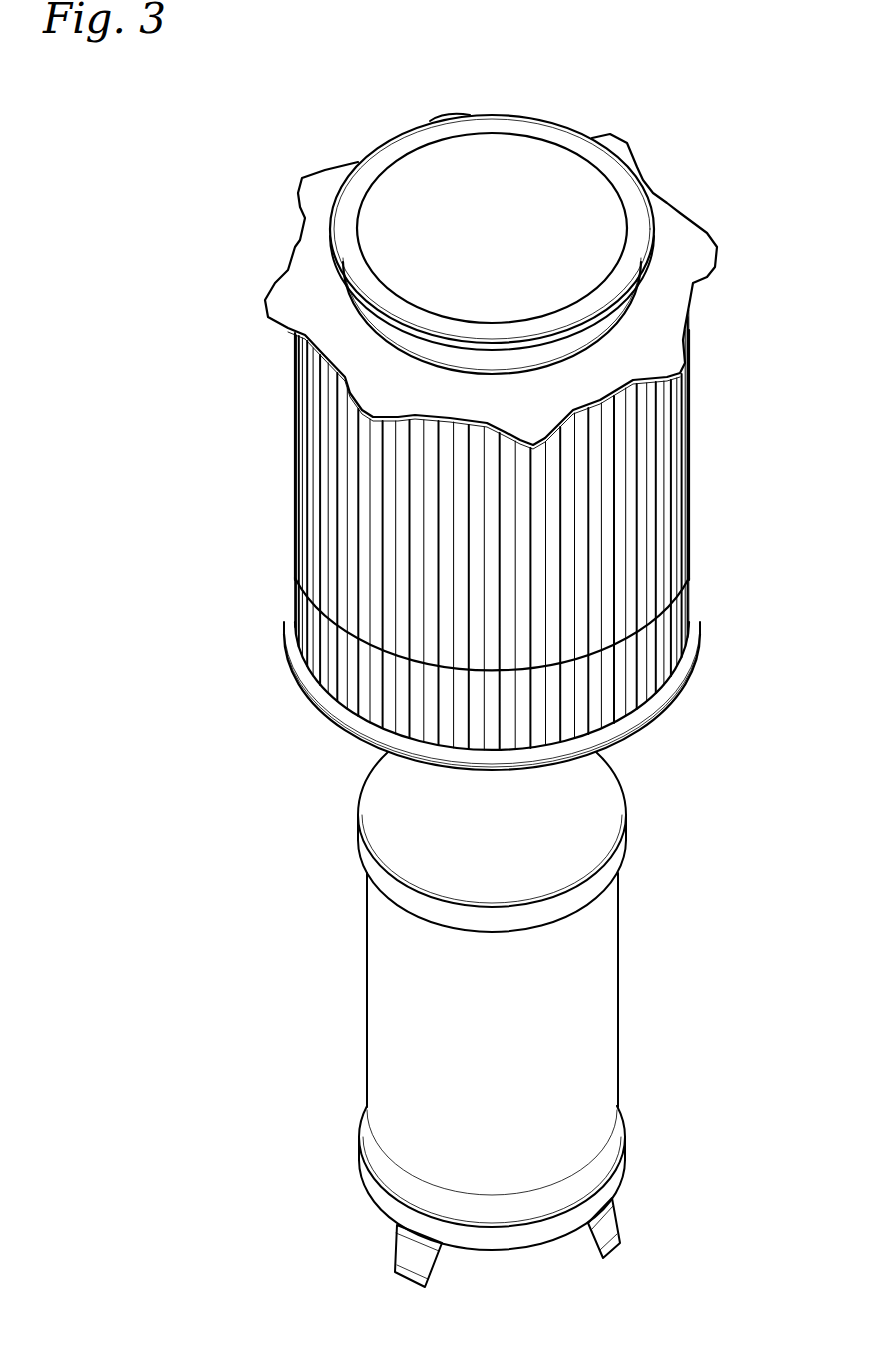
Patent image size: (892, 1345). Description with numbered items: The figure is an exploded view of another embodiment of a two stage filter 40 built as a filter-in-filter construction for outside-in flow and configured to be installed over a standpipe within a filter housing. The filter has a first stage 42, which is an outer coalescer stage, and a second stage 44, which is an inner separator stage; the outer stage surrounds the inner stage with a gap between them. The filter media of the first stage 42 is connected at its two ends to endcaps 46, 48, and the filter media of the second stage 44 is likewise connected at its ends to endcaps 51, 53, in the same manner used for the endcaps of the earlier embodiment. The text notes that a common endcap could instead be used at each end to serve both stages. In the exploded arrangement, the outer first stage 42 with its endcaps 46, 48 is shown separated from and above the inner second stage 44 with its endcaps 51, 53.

The two stage filter 40 is at (182, 236).
The first stage 42 is at (716, 406).
The second stage 44 is at (645, 953).
The endcap 46 is at (668, 200).
The endcap 48 is at (680, 680).
The endcap 51 is at (623, 793).
The endcap 53 is at (625, 1150).